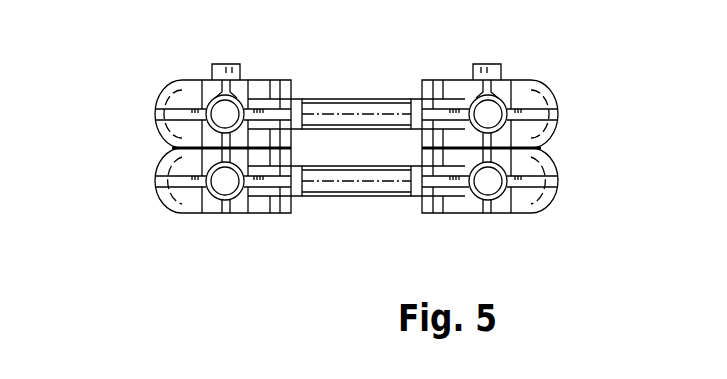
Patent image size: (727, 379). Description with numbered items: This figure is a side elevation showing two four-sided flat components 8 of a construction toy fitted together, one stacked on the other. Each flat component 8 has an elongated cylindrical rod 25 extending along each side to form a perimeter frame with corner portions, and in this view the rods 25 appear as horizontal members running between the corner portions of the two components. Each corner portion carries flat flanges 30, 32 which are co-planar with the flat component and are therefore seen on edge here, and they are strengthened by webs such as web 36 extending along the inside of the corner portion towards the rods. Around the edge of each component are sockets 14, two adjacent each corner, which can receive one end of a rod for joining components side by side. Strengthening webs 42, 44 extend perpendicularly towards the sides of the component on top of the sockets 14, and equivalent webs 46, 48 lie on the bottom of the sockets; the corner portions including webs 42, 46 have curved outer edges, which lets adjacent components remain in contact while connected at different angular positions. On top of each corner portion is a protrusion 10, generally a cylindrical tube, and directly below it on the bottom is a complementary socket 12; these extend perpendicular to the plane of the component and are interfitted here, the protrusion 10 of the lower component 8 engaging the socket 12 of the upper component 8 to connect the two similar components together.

The four-sided flat component 8 is at (437, 58).
The protrusion 10 is at (218, 64).
The socket 12 is at (222, 212).
The socket 14 is at (491, 110).
The elongated rod 25 is at (342, 112).
The flat flange 30 is at (156, 113).
The flat flange 32 is at (278, 82).
The web 36 is at (263, 92).
The strengthening web 42 is at (180, 79).
The strengthening web 44 is at (246, 80).
The strengthening web 46 is at (180, 205).
The strengthening web 48 is at (227, 213).